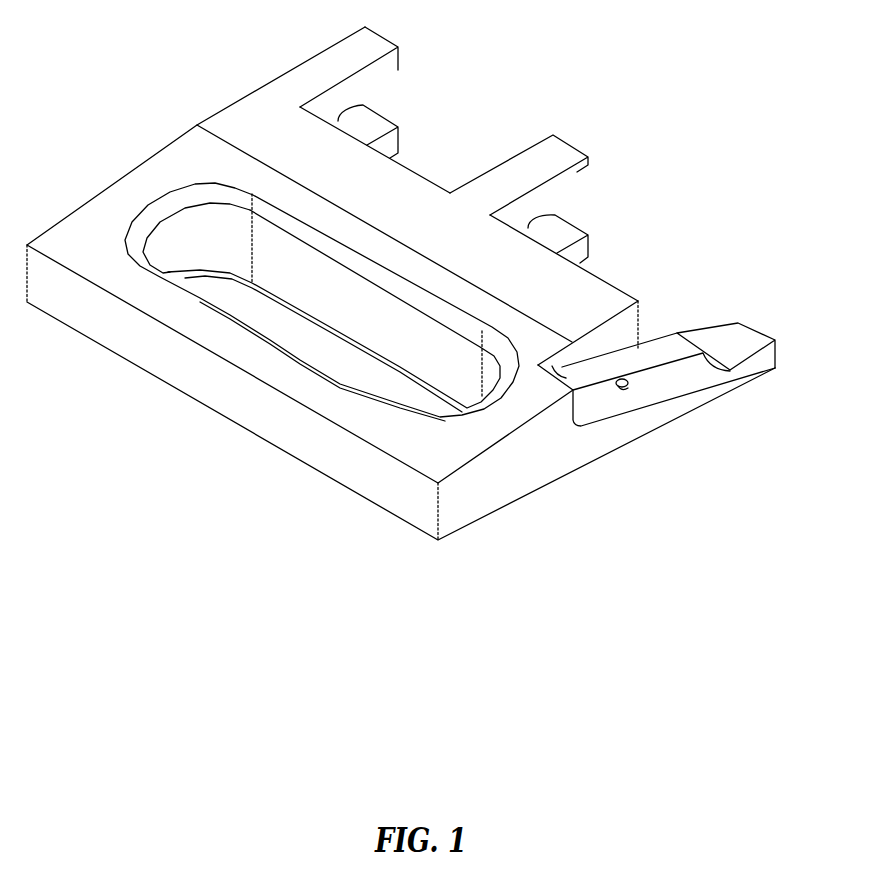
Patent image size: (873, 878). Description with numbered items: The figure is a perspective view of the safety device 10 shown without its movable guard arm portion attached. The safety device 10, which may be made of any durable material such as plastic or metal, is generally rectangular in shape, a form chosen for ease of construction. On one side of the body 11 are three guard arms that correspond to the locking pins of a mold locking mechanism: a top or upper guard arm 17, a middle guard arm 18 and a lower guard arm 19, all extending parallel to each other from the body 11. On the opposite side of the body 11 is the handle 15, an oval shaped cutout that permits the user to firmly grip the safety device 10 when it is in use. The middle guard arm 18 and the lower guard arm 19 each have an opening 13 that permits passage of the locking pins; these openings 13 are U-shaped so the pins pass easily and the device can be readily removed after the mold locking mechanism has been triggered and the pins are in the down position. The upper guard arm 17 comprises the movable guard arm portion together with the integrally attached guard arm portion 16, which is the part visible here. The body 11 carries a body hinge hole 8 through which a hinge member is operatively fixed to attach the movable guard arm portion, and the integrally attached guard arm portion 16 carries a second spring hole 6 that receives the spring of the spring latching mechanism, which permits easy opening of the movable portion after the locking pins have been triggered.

The safety device 10 is at (544, 526).
The body 11 is at (185, 148).
The handle 15 is at (308, 326).
The lower guard arm 19 is at (387, 69).
The middle guard arm 18 is at (580, 182).
The opening 13 is at (405, 106).
The body hinge hole 8 is at (641, 307).
The integrally attached guard arm portion 16 is at (657, 413).
The upper guard arm 17 is at (741, 346).
The second spring hole 6 is at (622, 389).